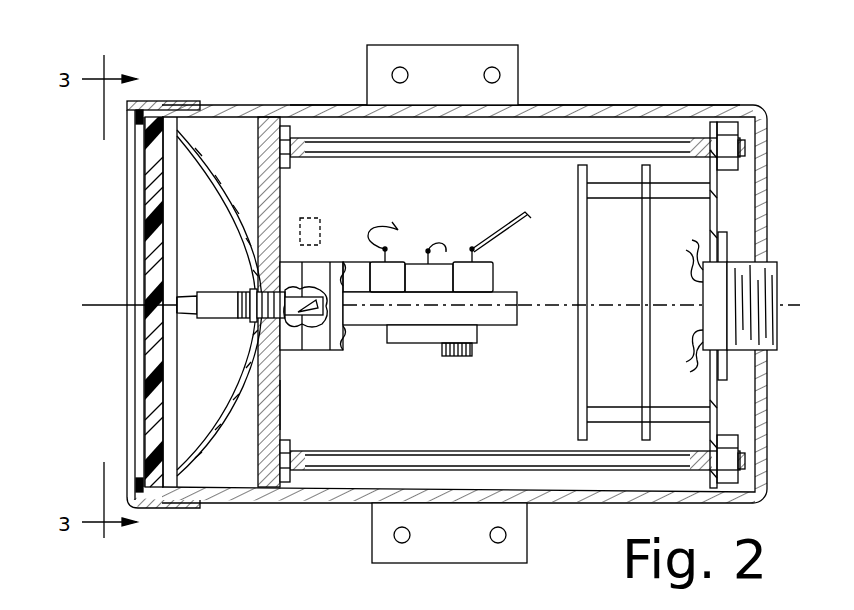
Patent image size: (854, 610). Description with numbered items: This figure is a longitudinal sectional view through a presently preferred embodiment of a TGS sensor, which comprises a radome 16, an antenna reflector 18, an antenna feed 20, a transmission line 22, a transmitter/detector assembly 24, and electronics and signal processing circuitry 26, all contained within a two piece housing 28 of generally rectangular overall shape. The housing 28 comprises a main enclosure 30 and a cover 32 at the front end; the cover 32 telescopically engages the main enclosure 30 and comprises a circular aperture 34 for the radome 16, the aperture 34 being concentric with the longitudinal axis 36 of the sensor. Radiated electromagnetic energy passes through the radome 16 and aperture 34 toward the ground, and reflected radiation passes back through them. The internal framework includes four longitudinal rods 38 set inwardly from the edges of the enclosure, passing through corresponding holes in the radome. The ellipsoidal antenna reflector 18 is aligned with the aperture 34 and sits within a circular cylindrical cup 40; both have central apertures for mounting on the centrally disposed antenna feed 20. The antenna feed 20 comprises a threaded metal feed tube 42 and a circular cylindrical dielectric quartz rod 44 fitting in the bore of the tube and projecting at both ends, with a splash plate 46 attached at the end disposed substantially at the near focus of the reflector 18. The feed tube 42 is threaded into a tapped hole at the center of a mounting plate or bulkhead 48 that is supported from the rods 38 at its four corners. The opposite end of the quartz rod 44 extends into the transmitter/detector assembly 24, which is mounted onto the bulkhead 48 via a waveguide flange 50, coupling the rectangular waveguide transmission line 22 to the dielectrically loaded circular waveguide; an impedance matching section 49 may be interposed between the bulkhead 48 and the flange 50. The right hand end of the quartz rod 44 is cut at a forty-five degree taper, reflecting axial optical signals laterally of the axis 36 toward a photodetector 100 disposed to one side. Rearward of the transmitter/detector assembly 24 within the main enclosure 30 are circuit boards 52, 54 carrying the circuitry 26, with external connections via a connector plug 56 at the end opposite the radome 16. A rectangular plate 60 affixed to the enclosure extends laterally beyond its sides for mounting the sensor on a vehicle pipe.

The radome 16 is at (152, 196).
The antenna reflector 18 is at (200, 143).
The antenna feed 20 is at (243, 324).
The transmission line 22 is at (352, 316).
The transmitter/detector assembly 24 is at (488, 328).
The electronics and signal processing circuitry 26 is at (642, 379).
The housing 28 is at (567, 105).
The main enclosure 30 is at (673, 107).
The cover 32 is at (150, 103).
The aperture 34 is at (130, 258).
The longitudinal axis 36 is at (103, 315).
The longitudinal rods 38 is at (535, 140).
The circular cylindrical cup 40 is at (258, 112).
The feed tube 42 is at (213, 300).
The quartz rod 44 is at (313, 290).
The splash plate 46 is at (180, 322).
The mounting plate or bulkhead 48 is at (282, 406).
The impedance matching section 49 is at (333, 352).
The waveguide flange 50 is at (335, 352).
The circuit board 52 is at (578, 278).
The circuit board 54 is at (642, 278).
The connector plug 56 is at (773, 262).
The rectangular plate 60 is at (447, 56).
The detector 100 is at (310, 215).